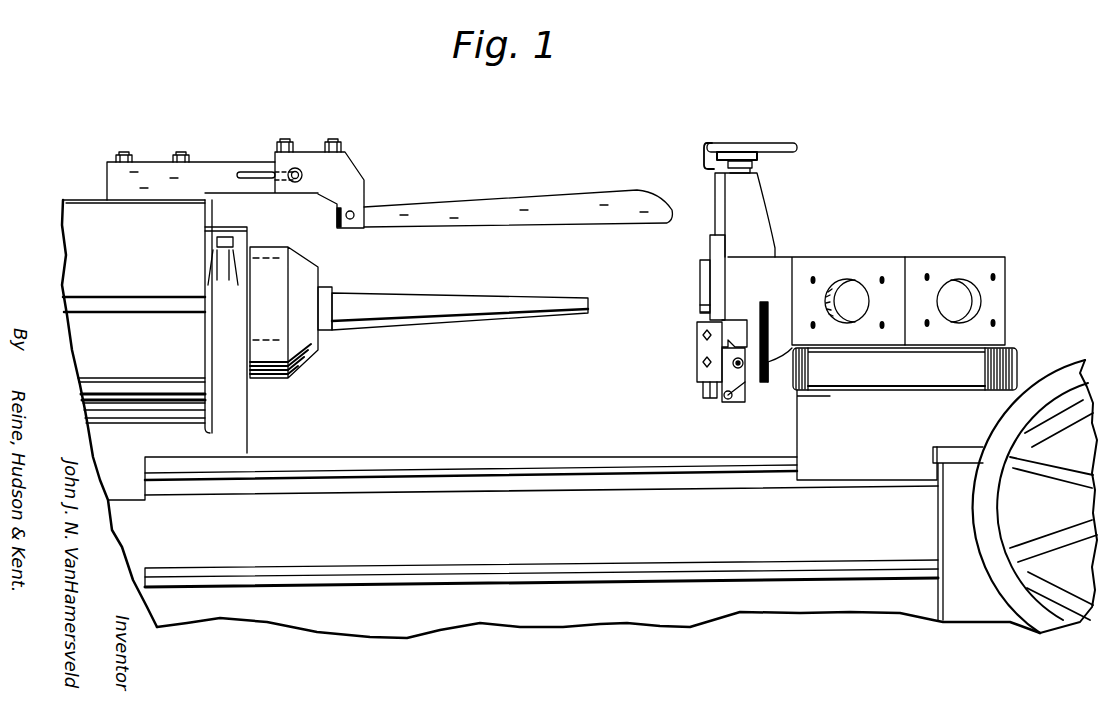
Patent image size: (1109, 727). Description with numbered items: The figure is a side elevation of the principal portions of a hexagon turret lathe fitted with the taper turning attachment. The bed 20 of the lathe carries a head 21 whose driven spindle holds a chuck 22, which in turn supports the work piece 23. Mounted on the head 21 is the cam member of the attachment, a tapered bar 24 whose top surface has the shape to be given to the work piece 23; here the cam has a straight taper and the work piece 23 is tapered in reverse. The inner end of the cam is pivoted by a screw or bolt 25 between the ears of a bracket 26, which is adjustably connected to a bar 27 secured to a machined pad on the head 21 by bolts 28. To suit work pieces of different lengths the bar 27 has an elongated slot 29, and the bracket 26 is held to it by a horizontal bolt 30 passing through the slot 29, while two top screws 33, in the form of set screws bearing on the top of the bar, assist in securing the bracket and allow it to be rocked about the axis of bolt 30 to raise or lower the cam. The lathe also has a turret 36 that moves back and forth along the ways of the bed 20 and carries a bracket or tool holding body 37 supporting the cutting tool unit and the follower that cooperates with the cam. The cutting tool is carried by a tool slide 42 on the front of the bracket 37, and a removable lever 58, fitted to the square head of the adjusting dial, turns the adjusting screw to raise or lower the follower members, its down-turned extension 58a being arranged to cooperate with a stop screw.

The bed 20 is at (495, 620).
The head 21 is at (75, 220).
The chuck 22 is at (303, 370).
The work piece 23 is at (457, 327).
The tapered bar 24 is at (470, 203).
The screw or bolt 25 is at (350, 220).
The bracket 26 is at (364, 173).
The bar 27 is at (227, 160).
The bolts 28 is at (180, 152).
The elongated slot 29 is at (253, 180).
The horizontal bolt 30 is at (294, 183).
The top screws 33 is at (334, 138).
The turret 36 is at (942, 257).
The bracket or tool holding body 37 is at (778, 262).
The tool slide 42 is at (698, 353).
The lever 58 is at (778, 145).
The down-turned extension 58a is at (705, 167).